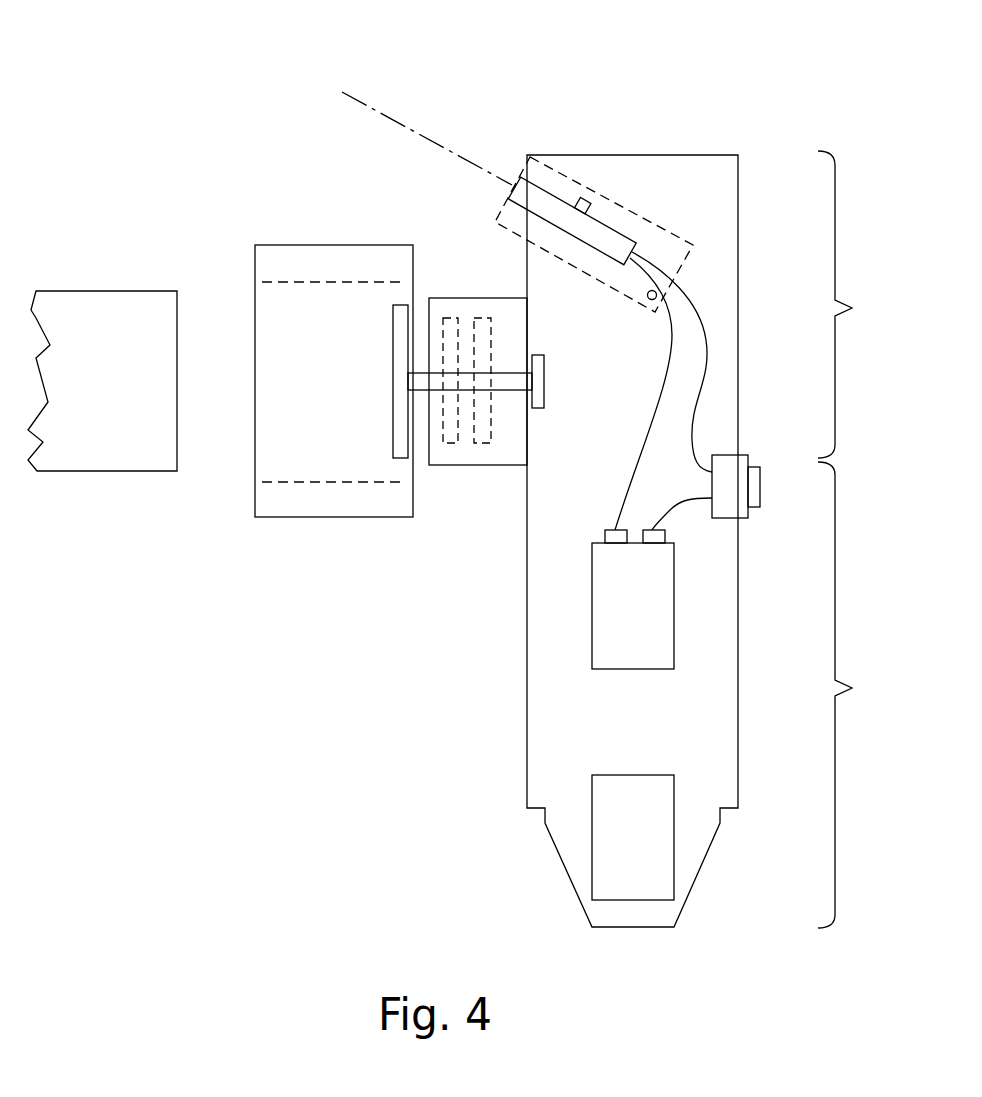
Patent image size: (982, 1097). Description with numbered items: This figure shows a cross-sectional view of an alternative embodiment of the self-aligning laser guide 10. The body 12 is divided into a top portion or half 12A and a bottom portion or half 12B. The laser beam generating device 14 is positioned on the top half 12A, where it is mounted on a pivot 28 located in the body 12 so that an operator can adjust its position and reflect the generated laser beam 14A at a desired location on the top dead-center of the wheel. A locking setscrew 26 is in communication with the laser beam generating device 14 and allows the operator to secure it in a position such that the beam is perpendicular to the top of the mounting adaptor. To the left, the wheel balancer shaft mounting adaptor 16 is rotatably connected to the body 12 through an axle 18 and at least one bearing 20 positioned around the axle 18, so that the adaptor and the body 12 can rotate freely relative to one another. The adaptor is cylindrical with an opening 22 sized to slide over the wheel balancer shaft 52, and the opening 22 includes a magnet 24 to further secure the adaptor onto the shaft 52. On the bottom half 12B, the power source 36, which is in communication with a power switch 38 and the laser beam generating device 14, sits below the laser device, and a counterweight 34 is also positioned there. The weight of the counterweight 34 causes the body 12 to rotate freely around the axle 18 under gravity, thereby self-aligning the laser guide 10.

The self-aligning laser guide 10 is at (190, 70).
The body 12 is at (740, 690).
The top portion or half 12A is at (856, 304).
The bottom portion or half 12B is at (856, 695).
The laser beam generating device 14 is at (508, 188).
The generated laser beam 14A is at (445, 143).
The wheel balancer shaft mounting adaptor 16 is at (290, 245).
The axle 18 is at (518, 392).
The bearing 20 is at (480, 318).
The opening 22 is at (255, 305).
The magnet 24 is at (400, 305).
The locking setscrew 26 is at (582, 202).
The pivot 28 is at (657, 290).
The counterweight 34 is at (646, 849).
The power source 36 is at (646, 618).
The power switch 38 is at (750, 462).
The wheel balancer shaft 52 is at (110, 396).